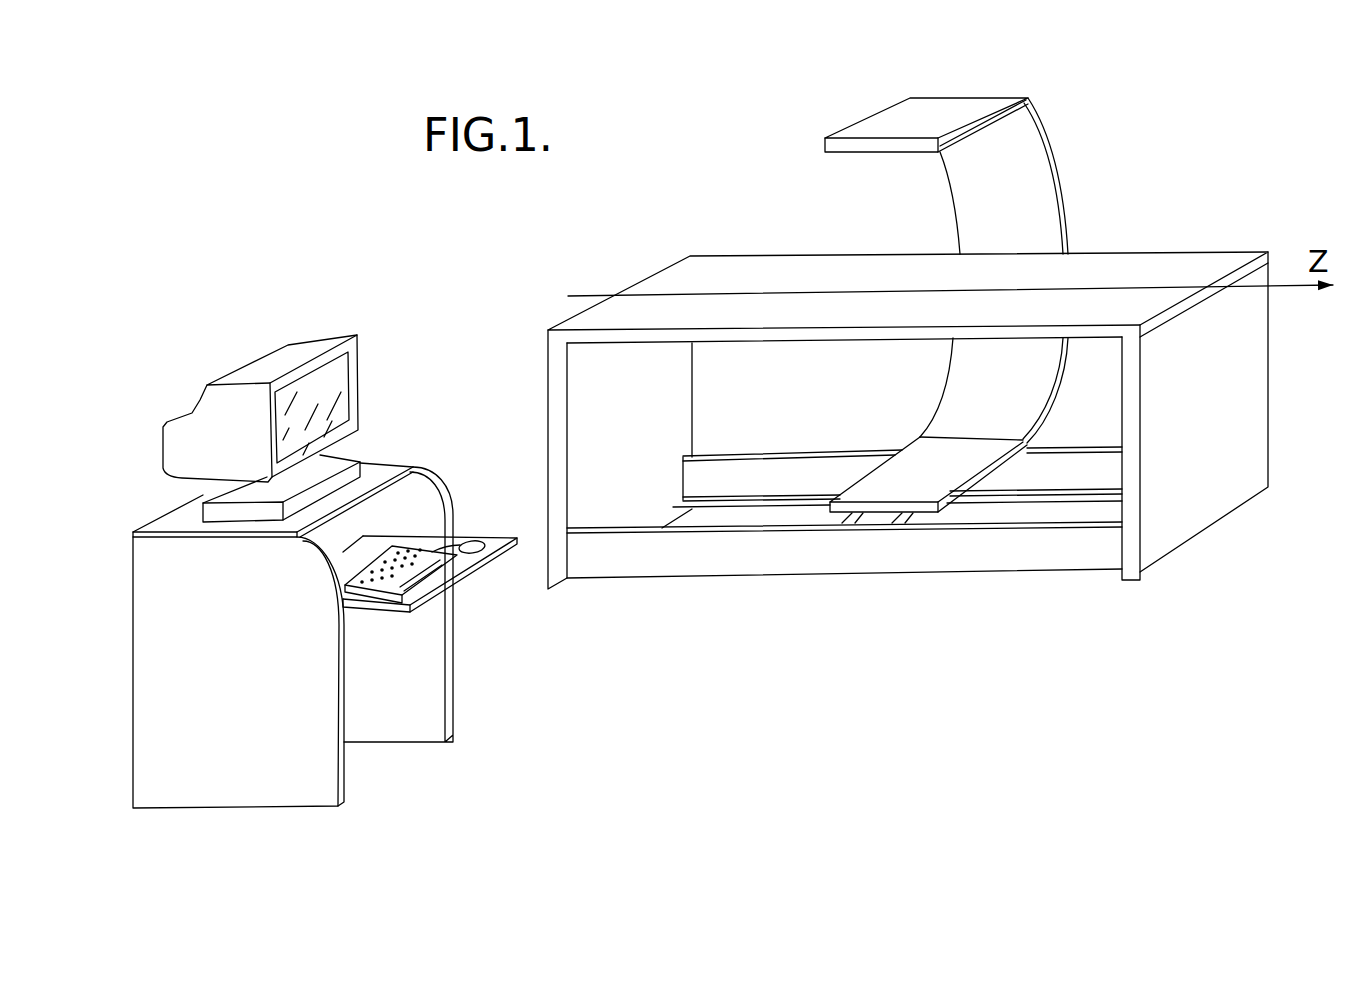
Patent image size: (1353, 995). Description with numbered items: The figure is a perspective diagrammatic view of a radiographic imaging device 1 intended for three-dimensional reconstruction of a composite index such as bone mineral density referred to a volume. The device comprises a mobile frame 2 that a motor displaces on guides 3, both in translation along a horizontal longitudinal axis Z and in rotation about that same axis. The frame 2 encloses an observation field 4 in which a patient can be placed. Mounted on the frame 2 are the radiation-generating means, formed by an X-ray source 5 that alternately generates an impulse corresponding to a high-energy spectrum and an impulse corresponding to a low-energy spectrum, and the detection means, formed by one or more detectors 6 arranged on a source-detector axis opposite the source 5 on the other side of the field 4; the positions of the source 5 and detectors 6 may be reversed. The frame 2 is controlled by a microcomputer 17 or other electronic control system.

The imaging device 1 is at (1083, 203).
The mobile frame 2 is at (1053, 148).
The guides 3 is at (900, 518).
The observation field 4 is at (785, 225).
The X-ray source 5 is at (883, 487).
The detectors 6 is at (947, 118).
The microcomputer 17 is at (378, 407).